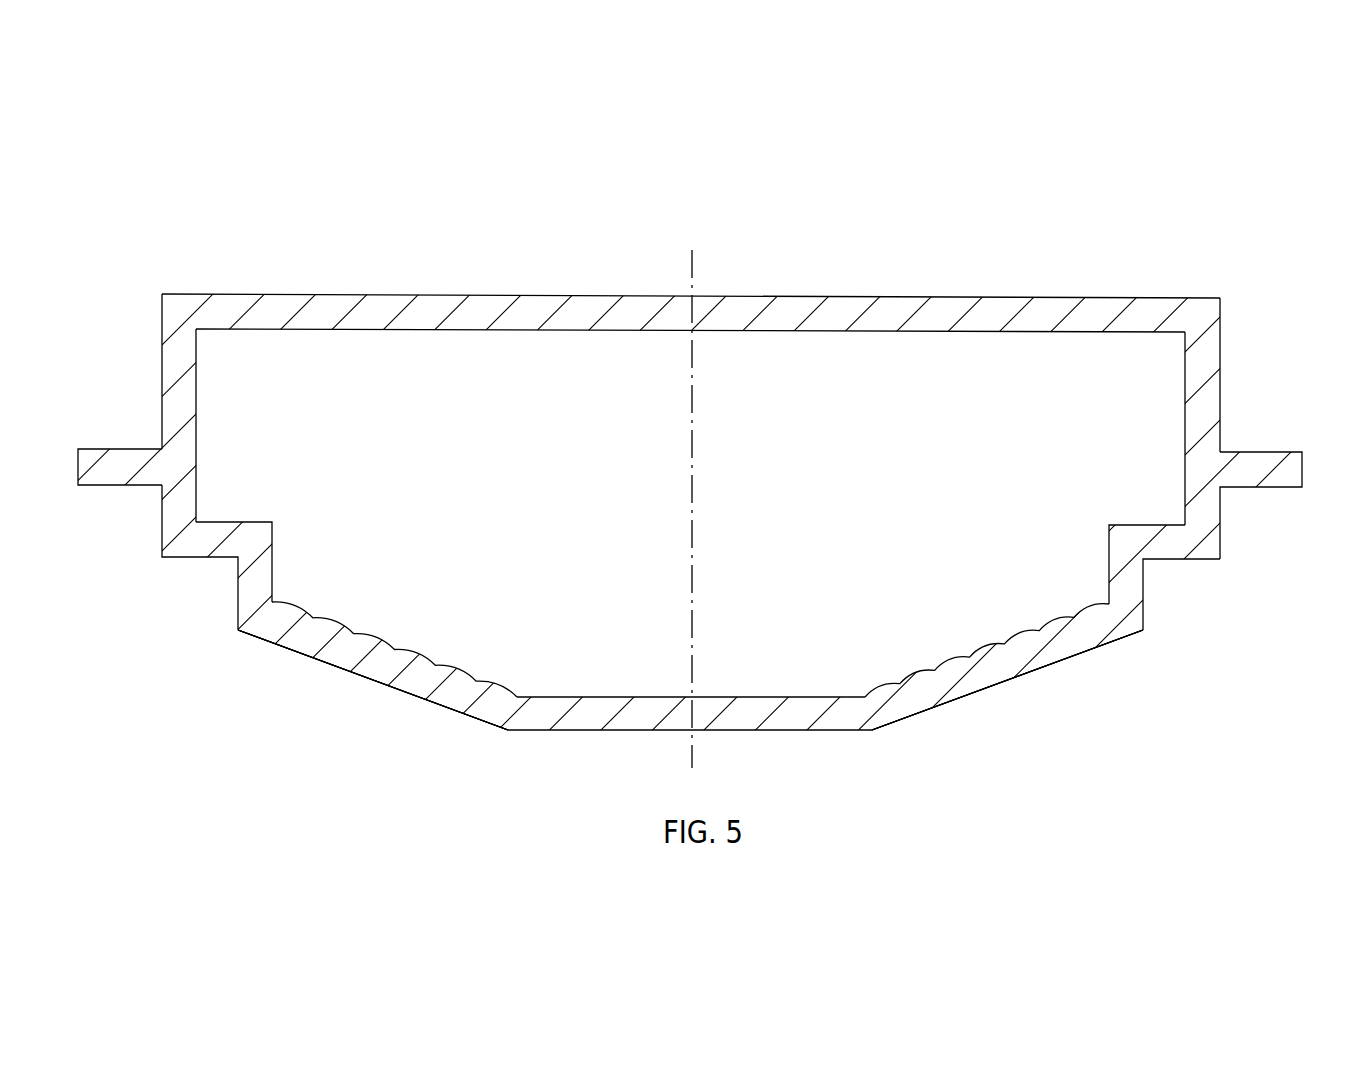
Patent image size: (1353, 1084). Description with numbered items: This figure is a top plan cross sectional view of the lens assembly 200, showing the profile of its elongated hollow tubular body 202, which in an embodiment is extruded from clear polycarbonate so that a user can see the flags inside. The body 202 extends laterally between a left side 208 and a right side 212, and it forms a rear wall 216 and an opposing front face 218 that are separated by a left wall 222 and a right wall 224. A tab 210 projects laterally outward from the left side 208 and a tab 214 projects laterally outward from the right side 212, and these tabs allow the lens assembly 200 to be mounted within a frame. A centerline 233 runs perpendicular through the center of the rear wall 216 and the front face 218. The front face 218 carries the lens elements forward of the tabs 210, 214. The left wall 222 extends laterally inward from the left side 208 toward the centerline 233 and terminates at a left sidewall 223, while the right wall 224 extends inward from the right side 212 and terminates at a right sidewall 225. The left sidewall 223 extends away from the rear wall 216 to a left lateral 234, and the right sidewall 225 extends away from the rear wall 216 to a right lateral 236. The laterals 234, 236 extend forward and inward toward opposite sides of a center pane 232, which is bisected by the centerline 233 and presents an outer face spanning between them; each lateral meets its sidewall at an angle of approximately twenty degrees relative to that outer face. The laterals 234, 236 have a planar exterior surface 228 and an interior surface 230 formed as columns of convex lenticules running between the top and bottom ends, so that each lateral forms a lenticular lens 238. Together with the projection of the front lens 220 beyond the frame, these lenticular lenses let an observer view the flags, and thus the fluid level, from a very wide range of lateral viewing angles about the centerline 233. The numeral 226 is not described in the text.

The lens assembly 200 is at (334, 230).
The body 202 is at (162, 294).
The left side 208 is at (197, 384).
The tab 210 is at (103, 449).
The right side 212 is at (1185, 385).
The tab 214 is at (1278, 452).
The rear wall 216 is at (870, 332).
The front face 218 is at (202, 690).
The front lens 220 is at (1084, 704).
The left wall 222 is at (232, 520).
The left sidewall 223 is at (238, 598).
The right wall 224 is at (1162, 513).
The right sidewall 225 is at (1143, 597).
The bottom wall 226 is at (595, 733).
The exterior surface 228 is at (458, 712).
The interior surface 230 is at (443, 660).
The center pane 232 is at (760, 695).
The centerline 233 is at (692, 450).
The left lateral 234 is at (335, 665).
The right lateral 236 is at (910, 717).
The lenticular lens 238 is at (369, 760).